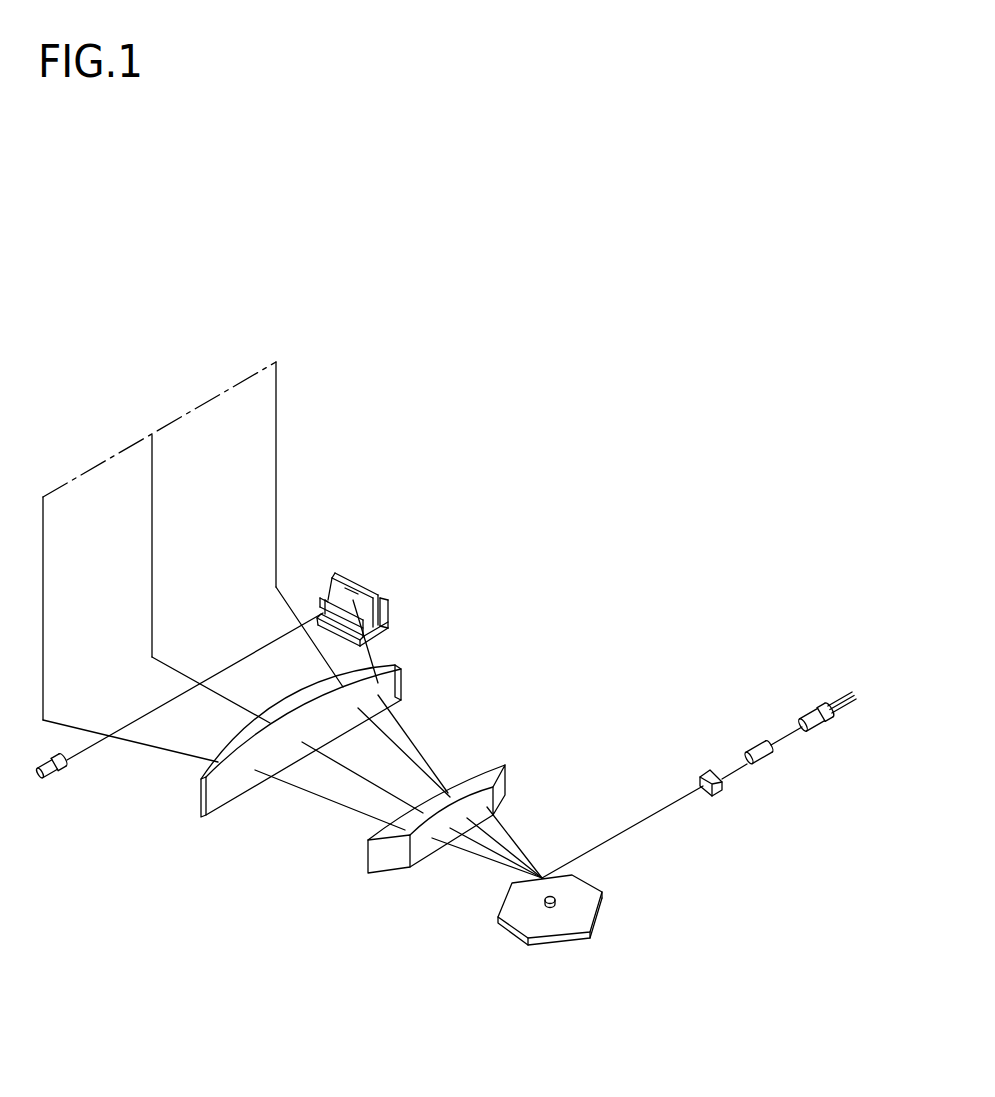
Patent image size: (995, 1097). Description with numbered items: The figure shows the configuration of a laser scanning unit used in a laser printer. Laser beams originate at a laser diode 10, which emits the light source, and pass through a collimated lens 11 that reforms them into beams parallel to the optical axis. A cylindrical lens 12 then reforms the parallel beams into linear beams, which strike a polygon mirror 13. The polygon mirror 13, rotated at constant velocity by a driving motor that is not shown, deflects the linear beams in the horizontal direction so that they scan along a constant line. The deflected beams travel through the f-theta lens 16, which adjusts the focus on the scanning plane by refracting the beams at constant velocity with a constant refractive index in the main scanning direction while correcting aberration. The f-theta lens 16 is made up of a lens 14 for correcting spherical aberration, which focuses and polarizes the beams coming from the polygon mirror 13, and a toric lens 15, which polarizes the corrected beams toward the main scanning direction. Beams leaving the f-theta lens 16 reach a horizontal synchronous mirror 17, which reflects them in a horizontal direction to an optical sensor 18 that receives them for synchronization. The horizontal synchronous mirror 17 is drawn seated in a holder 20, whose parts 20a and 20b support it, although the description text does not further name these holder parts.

The laser diode 10 is at (817, 727).
The collimated lens 11 is at (768, 758).
The cylindrical lens 12 is at (713, 795).
The polygon mirror 13 is at (588, 912).
The lens for correcting a spherical aberration 14 is at (505, 765).
The toric lens 15 is at (401, 688).
The f-theta lens 16 is at (381, 762).
The horizontal synchronous mirror 17 is at (330, 580).
The optical sensor 18 is at (40, 763).
The mirror holder 20 is at (403, 594).
The holder side post 20a is at (390, 607).
The holder base 20b is at (375, 637).